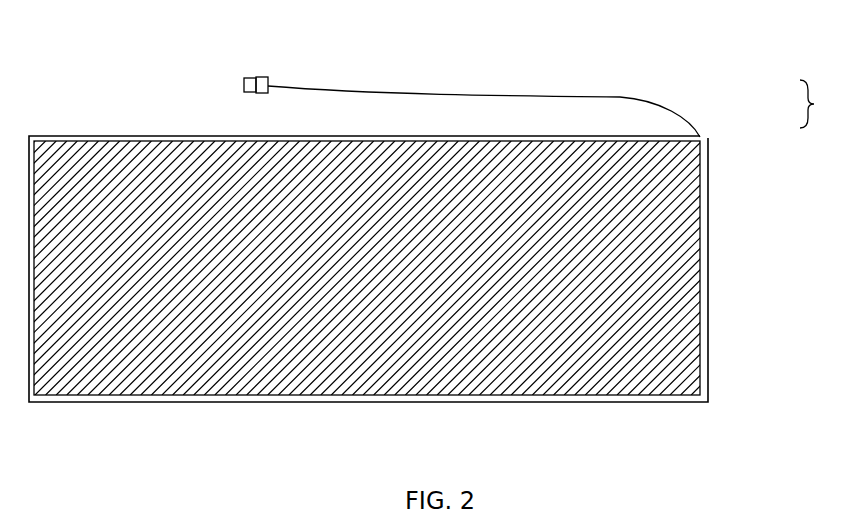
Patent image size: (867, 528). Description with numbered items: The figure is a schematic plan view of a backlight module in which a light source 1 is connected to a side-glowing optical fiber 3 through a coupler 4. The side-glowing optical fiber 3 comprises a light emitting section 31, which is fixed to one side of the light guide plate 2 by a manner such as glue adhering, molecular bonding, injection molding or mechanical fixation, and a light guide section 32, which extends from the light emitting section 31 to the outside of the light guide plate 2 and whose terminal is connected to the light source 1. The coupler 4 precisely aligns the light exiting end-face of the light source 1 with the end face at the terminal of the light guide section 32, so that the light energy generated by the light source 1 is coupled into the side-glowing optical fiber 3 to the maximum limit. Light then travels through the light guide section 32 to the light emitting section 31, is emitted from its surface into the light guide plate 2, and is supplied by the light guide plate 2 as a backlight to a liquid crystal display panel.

The light source 1 is at (250, 82).
The light guide plate 2 is at (680, 290).
The side-glowing optical fiber 3 is at (816, 104).
The light emitting section 31 is at (707, 193).
The light guide section 32 is at (640, 100).
The coupler 4 is at (266, 82).